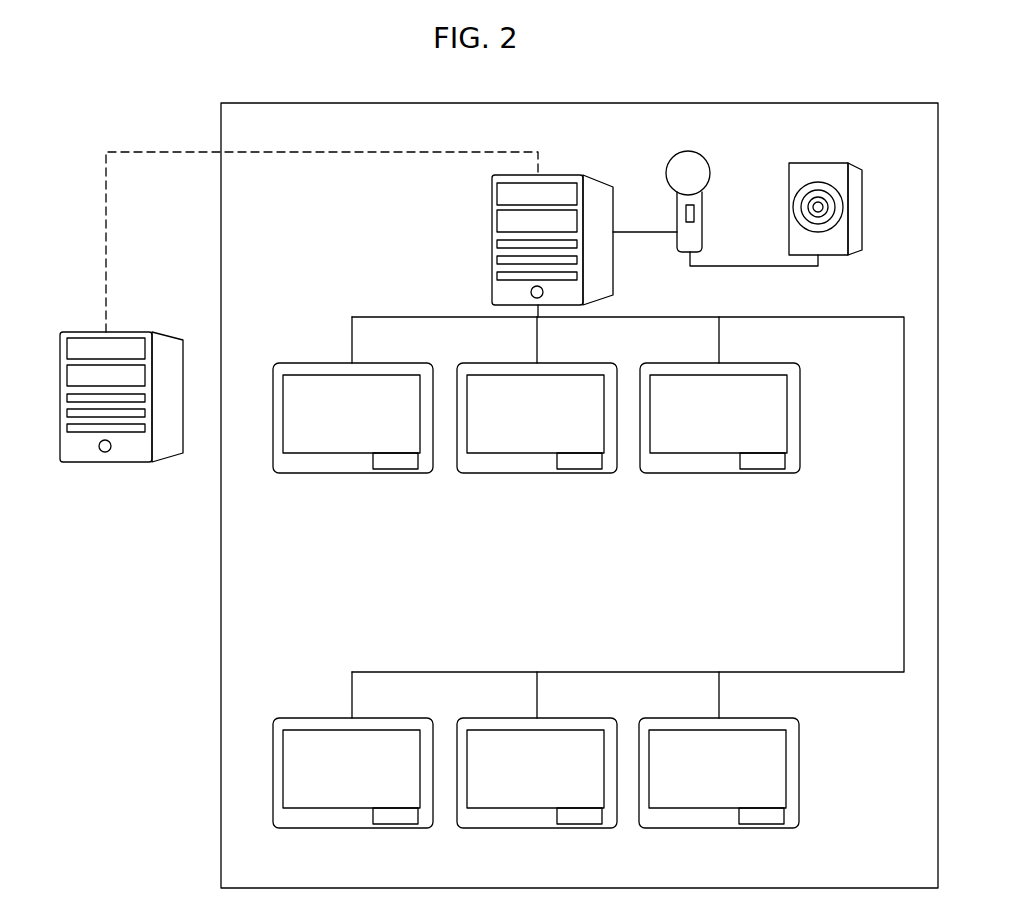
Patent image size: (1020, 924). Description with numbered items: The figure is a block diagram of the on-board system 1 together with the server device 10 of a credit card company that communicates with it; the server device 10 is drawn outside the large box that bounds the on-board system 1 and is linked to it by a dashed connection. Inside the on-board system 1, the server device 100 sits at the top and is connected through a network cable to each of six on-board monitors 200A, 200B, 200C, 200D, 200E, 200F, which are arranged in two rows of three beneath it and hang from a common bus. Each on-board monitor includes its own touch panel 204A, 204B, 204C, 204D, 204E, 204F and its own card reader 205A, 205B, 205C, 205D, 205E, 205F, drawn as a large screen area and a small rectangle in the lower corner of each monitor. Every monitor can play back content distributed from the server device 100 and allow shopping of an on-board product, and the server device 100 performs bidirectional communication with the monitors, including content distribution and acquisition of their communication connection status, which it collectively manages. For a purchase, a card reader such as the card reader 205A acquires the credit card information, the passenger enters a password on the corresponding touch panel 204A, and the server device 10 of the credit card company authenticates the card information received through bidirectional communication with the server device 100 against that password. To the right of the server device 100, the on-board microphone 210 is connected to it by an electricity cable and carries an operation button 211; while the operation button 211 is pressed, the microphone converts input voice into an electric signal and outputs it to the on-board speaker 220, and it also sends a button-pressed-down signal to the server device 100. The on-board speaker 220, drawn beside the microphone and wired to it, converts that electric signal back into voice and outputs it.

The on-board system 1 is at (840, 103).
The server device 10 is at (128, 331).
The server device 100 is at (563, 176).
The on-board microphone 210 is at (715, 197).
The operation button 211 is at (702, 209).
The on-board speaker 220 is at (845, 163).
The on-board monitor 200A is at (376, 415).
The on-board monitor 200B is at (564, 415).
The on-board monitor 200C is at (747, 415).
The on-board monitor 200D is at (367, 770).
The on-board monitor 200E is at (557, 770).
The on-board monitor 200F is at (739, 769).
The touch panel 204A is at (410, 363).
The touch panel 204B is at (594, 363).
The touch panel 204C is at (777, 363).
The touch panel 204D is at (410, 718).
The touch panel 204E is at (594, 718).
The touch panel 204F is at (776, 718).
The card reader 205A is at (400, 466).
The card reader 205B is at (584, 466).
The card reader 205C is at (767, 466).
The card reader 205D is at (400, 821).
The card reader 205E is at (584, 821).
The card reader 205F is at (766, 821).